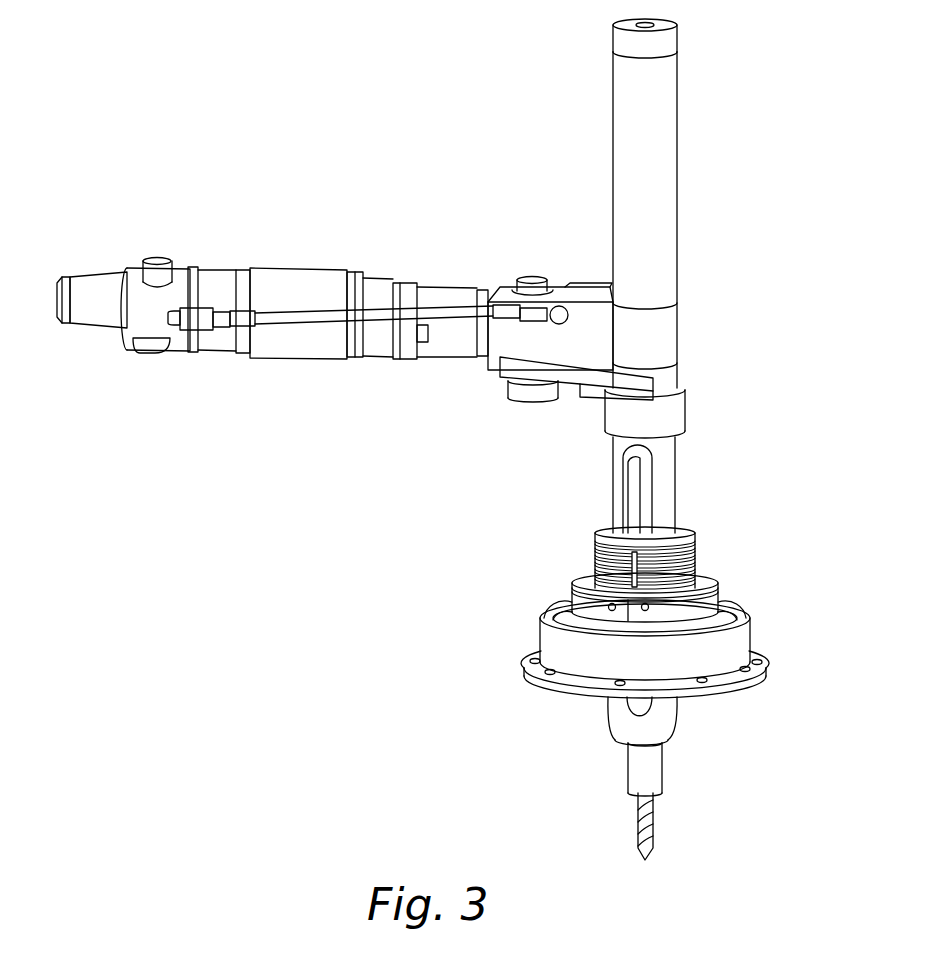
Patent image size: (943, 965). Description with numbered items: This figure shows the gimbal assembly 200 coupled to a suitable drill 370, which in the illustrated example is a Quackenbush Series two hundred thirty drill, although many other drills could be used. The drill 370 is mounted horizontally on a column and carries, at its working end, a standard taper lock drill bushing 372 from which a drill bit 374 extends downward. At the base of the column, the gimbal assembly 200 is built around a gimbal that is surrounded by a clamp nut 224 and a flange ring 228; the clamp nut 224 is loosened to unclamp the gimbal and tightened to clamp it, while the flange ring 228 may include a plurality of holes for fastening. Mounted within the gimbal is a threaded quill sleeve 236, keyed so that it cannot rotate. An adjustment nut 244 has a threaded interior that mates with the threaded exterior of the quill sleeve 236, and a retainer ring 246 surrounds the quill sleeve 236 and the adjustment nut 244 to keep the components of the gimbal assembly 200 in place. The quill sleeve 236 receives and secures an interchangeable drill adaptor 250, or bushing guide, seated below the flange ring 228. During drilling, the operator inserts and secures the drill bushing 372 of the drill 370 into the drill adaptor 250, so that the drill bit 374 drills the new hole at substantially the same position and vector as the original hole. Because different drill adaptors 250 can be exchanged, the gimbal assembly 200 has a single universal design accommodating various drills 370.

The gimbal assembly 200 is at (723, 488).
The drill 370 is at (320, 267).
The quill sleeve 236 is at (593, 543).
The adjustment nut 244 is at (702, 578).
The retainer ring 246 is at (567, 600).
The clamp nut 224 is at (543, 636).
The flange ring 228 is at (763, 652).
The drill adaptor 250 is at (613, 720).
The drill bushing 372 is at (660, 767).
The drill bit 374 is at (653, 825).